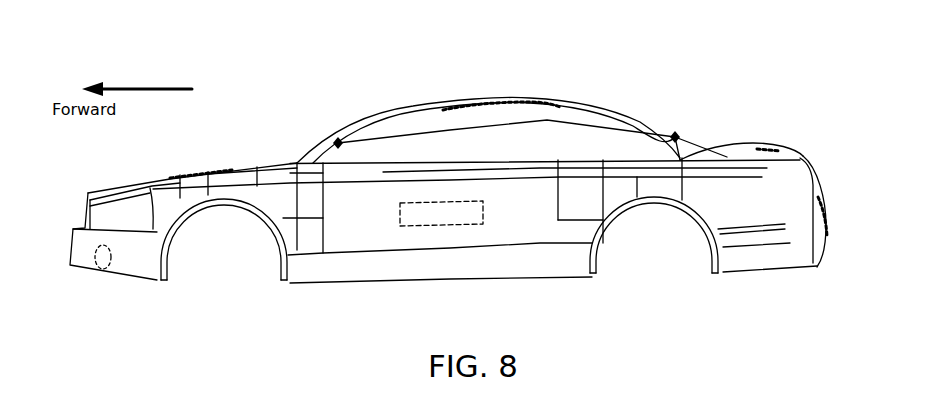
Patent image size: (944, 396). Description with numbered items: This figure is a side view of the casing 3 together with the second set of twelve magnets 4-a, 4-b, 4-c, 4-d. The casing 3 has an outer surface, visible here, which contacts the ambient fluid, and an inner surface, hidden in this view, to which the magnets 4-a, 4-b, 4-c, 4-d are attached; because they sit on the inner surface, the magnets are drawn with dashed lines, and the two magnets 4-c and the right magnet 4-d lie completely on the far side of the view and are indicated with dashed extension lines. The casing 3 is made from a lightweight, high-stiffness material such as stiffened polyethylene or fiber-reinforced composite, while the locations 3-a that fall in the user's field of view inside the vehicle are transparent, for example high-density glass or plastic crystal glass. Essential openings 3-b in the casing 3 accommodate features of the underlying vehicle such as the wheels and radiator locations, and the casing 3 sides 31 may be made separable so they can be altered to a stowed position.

The casing 3 is at (372, 92).
The transparent locations of the casing 3-a is at (545, 138).
The essential openings 3-b is at (218, 252).
The casing sides 31 is at (387, 260).
The magnet 4-a is at (103, 262).
The magnet 4-b is at (200, 172).
The magnets 4-c is at (827, 224).
The magnet 4-d is at (463, 217).